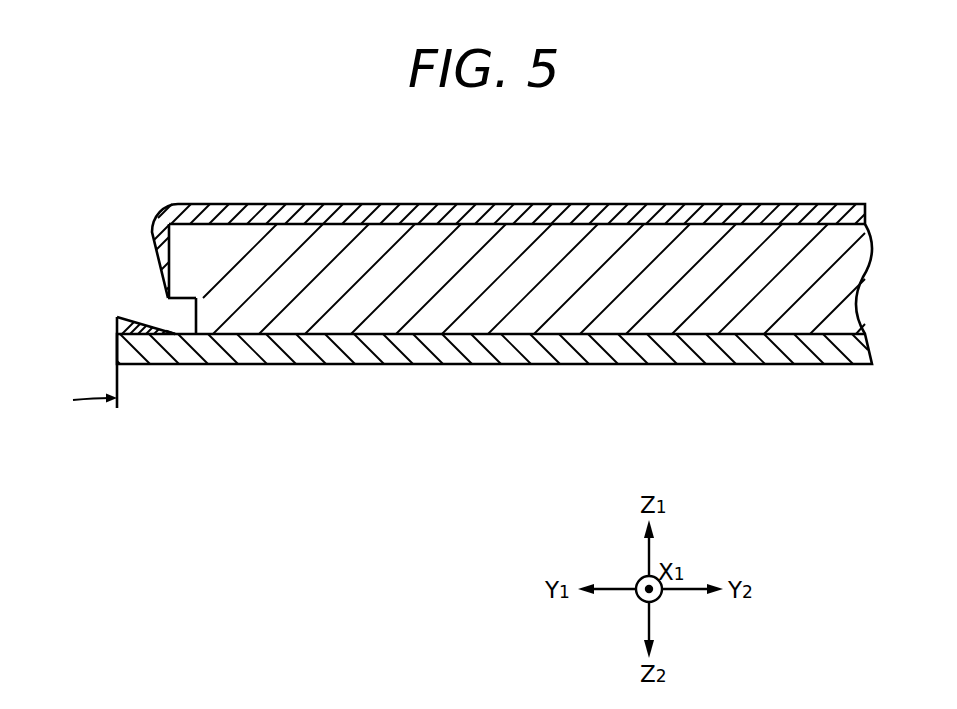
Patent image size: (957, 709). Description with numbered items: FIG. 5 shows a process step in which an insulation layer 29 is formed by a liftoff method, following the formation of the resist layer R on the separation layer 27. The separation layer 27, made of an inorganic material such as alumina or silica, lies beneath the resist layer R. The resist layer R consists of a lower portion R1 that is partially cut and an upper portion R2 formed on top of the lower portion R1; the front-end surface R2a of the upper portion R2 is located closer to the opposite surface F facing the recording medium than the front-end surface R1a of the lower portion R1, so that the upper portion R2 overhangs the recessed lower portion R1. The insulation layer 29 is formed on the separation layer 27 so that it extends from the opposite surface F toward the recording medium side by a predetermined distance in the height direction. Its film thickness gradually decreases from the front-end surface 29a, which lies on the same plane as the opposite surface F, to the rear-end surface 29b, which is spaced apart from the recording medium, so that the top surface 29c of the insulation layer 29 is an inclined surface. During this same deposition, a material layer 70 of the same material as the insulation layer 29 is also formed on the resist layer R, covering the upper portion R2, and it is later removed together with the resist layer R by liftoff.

The material layer 70 is at (270, 212).
The resist layer R is at (393, 237).
The front-end surface of the upper portion R2a is at (153, 228).
The upper portion R2 is at (178, 250).
The front-end surface of the lower portion R1a is at (206, 316).
The lower portion R1 is at (189, 336).
The separation layer 27 is at (120, 350).
The insulation layer 29 is at (134, 330).
The front-end surface 29a is at (117, 328).
The rear-end surface 29b is at (173, 334).
The top surface 29c is at (150, 326).
The opposite surface F is at (85, 400).